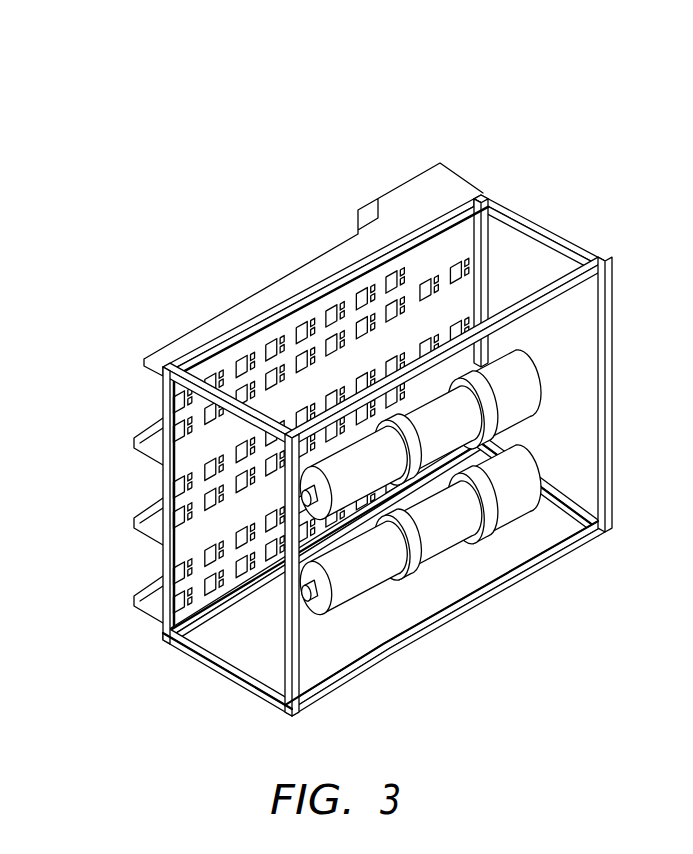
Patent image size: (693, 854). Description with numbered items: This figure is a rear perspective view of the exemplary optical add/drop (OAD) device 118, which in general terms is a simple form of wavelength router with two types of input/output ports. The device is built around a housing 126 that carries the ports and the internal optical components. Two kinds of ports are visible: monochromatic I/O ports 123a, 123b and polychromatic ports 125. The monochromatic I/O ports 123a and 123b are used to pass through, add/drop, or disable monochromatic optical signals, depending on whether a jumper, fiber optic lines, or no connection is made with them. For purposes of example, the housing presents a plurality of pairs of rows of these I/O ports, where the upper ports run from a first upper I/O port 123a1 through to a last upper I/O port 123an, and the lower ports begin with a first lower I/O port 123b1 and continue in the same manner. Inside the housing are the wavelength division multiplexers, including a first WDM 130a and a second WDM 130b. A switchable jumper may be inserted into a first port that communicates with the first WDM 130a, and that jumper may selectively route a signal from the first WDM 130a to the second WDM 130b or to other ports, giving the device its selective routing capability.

The OAD device 118 is at (510, 93).
The polychromatic ports 125 is at (421, 283).
The housing 126 is at (573, 251).
The monochromatic I/O port 123a is at (264, 380).
The monochromatic I/O port 123b is at (277, 382).
The upper I/O port 123a1 is at (452, 328).
The lower I/O port 123b1 is at (458, 427).
The first WDM 130a is at (480, 447).
The WDM 130b is at (523, 477).
The upper I/O port 123an is at (170, 598).